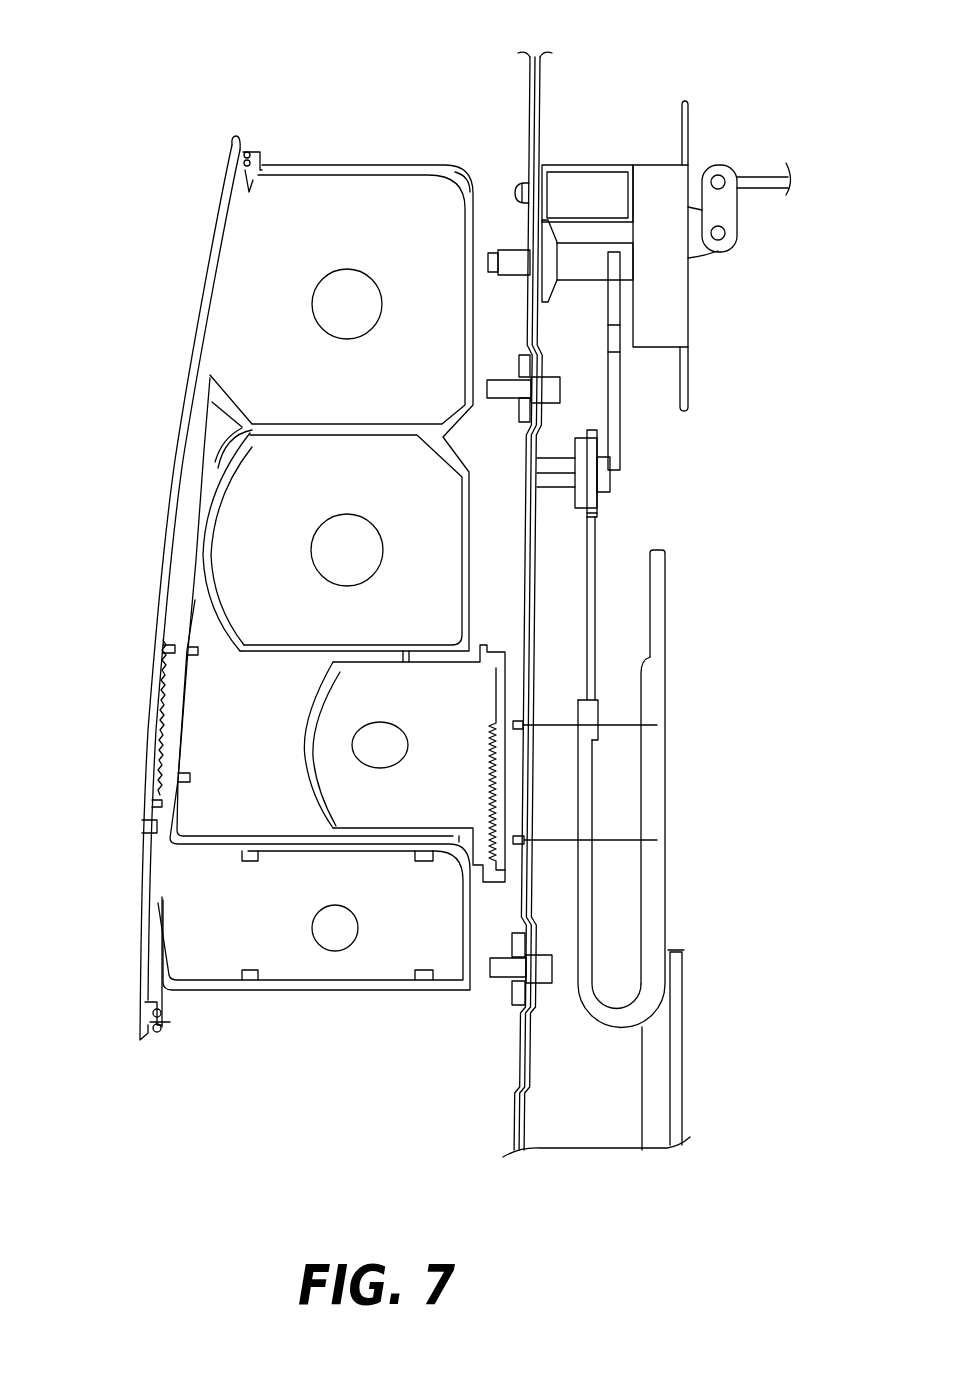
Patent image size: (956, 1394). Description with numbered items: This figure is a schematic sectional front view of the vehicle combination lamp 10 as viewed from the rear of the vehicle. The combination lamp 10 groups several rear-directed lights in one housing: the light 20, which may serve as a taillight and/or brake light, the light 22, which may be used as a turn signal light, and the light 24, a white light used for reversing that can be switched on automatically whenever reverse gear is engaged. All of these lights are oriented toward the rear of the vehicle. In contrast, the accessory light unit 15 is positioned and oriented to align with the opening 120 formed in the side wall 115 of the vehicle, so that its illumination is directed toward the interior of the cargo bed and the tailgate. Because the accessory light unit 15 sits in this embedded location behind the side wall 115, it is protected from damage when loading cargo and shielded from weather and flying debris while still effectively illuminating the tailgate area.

The vehicle combination lamp 10 is at (338, 108).
The light 20 is at (182, 336).
The light 22 is at (152, 506).
The accessory light unit 15 is at (132, 733).
The light 24 is at (123, 896).
The opening 120 is at (655, 770).
The side wall 115 is at (689, 1022).